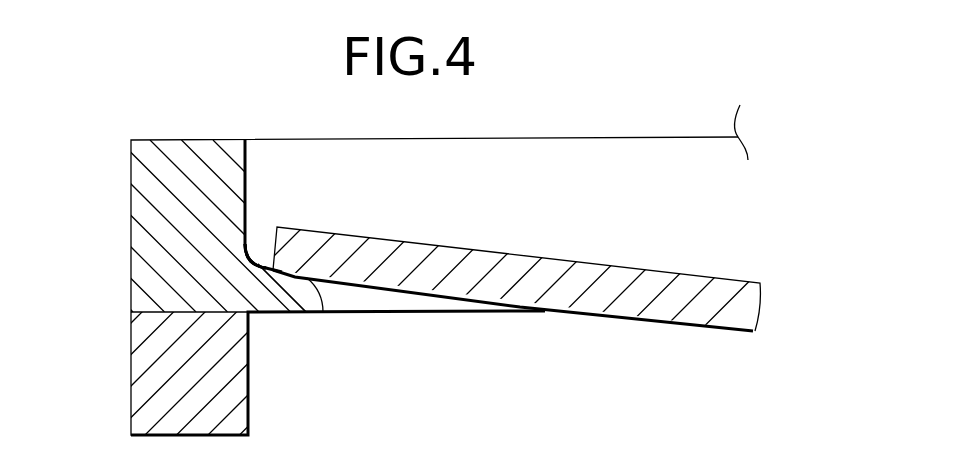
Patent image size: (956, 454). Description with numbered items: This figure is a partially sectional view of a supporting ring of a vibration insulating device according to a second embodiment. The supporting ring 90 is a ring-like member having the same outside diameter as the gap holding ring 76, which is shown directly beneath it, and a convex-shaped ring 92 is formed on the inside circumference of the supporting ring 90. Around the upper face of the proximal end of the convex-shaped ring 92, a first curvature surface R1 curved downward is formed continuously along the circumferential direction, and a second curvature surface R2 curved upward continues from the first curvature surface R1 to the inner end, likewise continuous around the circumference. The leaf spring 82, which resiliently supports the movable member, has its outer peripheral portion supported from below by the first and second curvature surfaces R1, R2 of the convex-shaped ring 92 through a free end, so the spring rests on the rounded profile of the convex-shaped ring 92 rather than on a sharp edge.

The supporting ring 90 is at (153, 230).
The gap holding ring 76 is at (158, 403).
The leaf spring 82 is at (515, 268).
The convex-shaped ring 92 is at (263, 297).
The first curvature surface R1 is at (258, 257).
The second curvature surface R2 is at (310, 282).